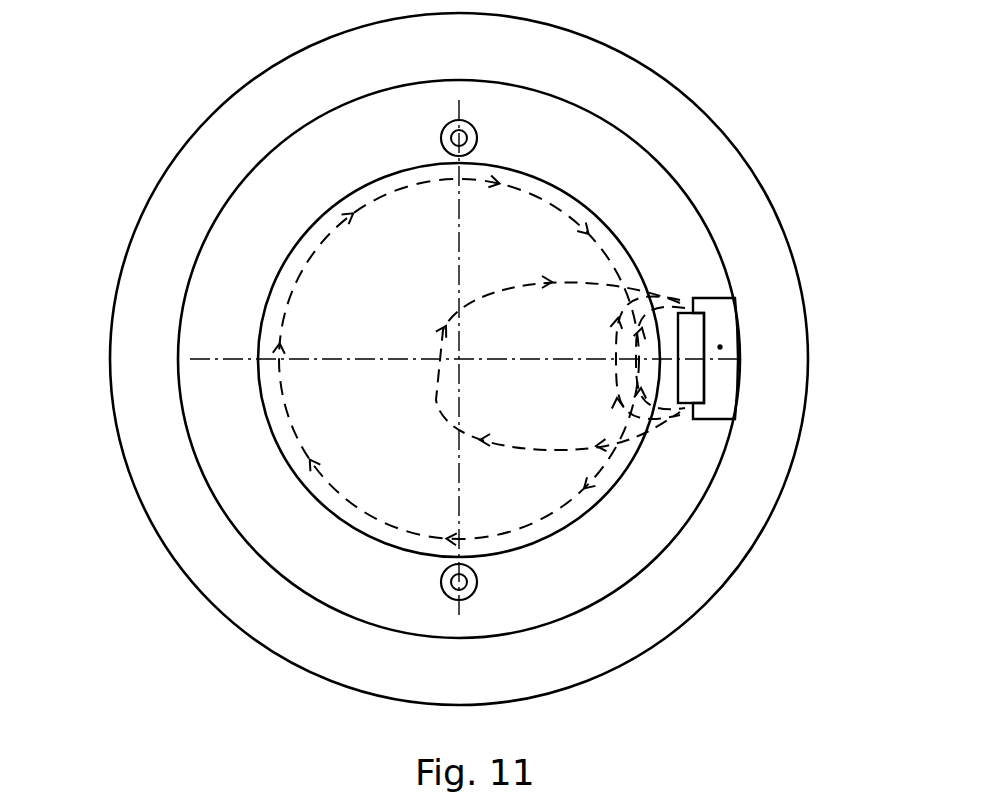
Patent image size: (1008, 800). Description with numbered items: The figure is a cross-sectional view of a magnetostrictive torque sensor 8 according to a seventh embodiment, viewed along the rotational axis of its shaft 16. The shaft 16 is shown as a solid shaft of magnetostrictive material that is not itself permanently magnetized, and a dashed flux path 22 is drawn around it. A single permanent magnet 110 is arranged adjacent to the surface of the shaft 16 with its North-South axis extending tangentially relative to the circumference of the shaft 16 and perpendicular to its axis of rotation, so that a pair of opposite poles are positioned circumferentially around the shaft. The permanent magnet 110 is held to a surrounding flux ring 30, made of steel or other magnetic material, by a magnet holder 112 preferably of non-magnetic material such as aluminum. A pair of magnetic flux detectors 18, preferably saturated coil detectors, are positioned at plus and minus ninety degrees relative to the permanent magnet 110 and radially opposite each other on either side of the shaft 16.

The magnetostrictive sensor 8 is at (393, 359).
The shaft 16 is at (294, 474).
The magnetic flux detectors 18 is at (441, 140).
The rotor / magnetic flux path 22 is at (578, 219).
The flux ring 30 is at (660, 647).
The permanent magnet 110 is at (692, 389).
The magnet holder 112 is at (723, 337).